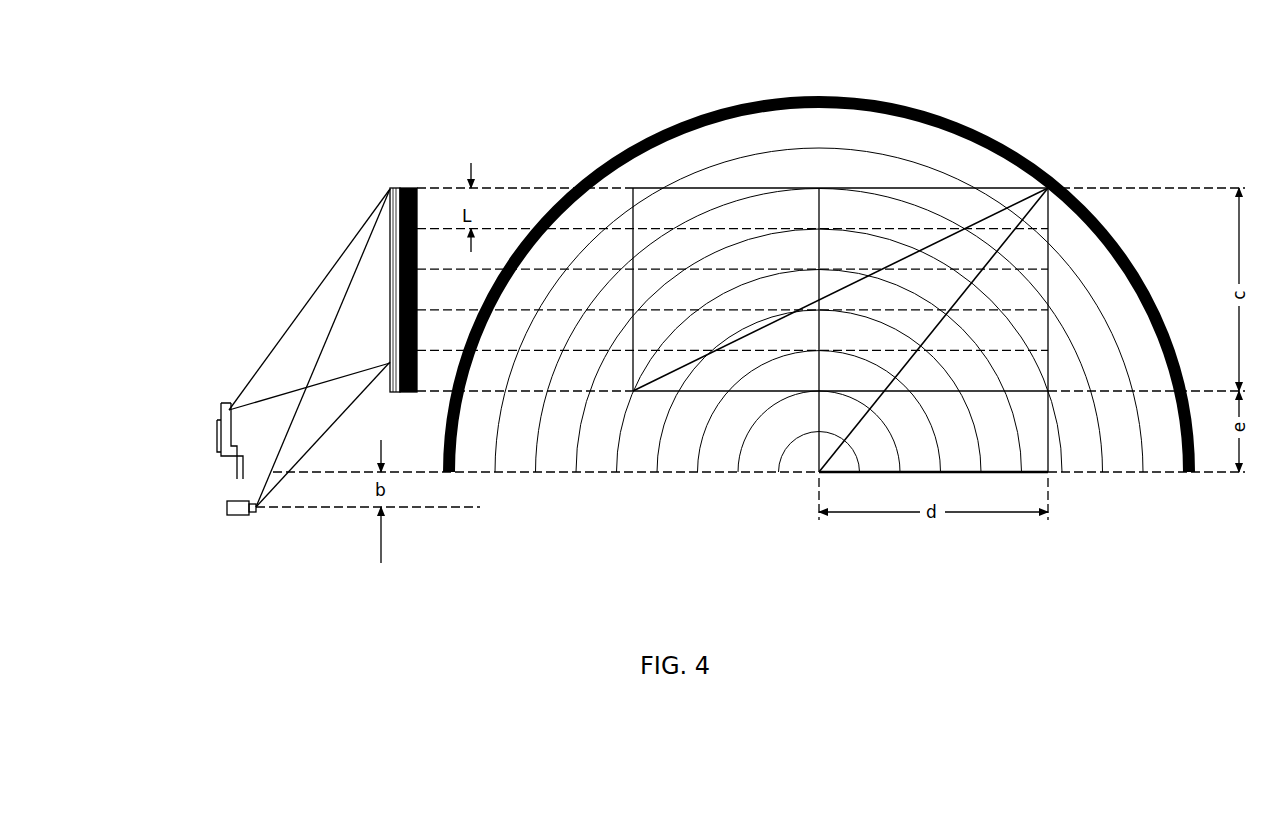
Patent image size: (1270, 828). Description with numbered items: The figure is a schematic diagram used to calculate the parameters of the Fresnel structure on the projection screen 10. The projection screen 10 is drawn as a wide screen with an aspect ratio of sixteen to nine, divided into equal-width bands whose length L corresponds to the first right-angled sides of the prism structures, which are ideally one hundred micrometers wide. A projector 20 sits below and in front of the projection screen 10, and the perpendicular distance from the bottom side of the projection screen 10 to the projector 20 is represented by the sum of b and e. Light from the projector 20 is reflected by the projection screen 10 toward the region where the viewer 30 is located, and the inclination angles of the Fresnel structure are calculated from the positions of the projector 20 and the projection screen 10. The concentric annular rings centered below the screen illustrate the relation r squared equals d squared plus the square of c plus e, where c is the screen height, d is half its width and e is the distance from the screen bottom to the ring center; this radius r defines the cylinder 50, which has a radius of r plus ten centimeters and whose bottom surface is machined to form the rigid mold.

The projection screen 10 is at (403, 184).
The projector 20 is at (241, 514).
The viewer 30 is at (226, 404).
The cylinder 50 is at (950, 110).